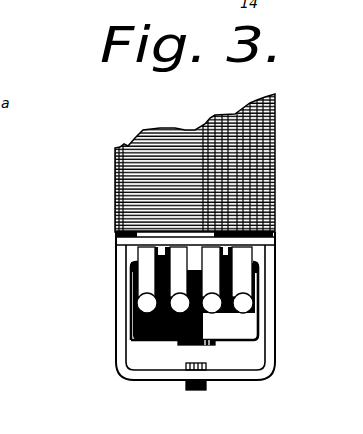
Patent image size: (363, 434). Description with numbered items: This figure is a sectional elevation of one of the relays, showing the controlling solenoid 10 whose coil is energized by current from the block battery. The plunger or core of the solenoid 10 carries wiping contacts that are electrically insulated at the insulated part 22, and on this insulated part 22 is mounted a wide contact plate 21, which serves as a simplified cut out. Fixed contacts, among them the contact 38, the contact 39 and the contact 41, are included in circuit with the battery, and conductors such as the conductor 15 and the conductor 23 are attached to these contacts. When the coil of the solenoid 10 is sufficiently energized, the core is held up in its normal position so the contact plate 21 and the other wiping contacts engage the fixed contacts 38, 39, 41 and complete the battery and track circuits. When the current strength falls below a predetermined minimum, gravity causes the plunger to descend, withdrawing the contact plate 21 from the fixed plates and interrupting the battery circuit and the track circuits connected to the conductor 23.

The solenoid 10 is at (275, 152).
The contact 38 is at (127, 263).
The contact 39 is at (143, 280).
The contact 41 is at (115, 305).
The conductor 15 is at (243, 302).
The conductor 23 is at (218, 310).
The contact plate 21 is at (238, 327).
The insulated part 22 is at (133, 340).